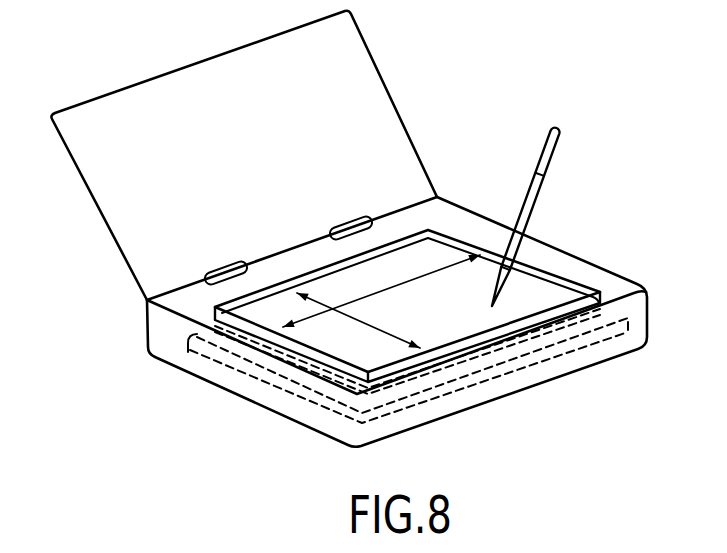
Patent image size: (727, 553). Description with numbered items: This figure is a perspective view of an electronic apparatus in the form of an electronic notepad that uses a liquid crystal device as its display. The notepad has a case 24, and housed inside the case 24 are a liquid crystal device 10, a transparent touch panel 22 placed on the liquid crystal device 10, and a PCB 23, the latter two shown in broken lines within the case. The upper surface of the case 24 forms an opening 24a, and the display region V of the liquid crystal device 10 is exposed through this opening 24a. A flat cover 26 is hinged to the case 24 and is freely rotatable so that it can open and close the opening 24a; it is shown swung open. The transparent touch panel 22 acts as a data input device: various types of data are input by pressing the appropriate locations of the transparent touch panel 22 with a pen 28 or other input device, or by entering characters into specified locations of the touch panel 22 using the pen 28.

The liquid crystal device 10 is at (490, 350).
The transparent touch panel 22 is at (453, 245).
The PCB (printed circuit board) 23 is at (407, 405).
The case 24 is at (623, 287).
The opening 24a is at (263, 332).
The flat cover 26 is at (368, 97).
The pen 28 is at (547, 175).
The display region V is at (407, 337).